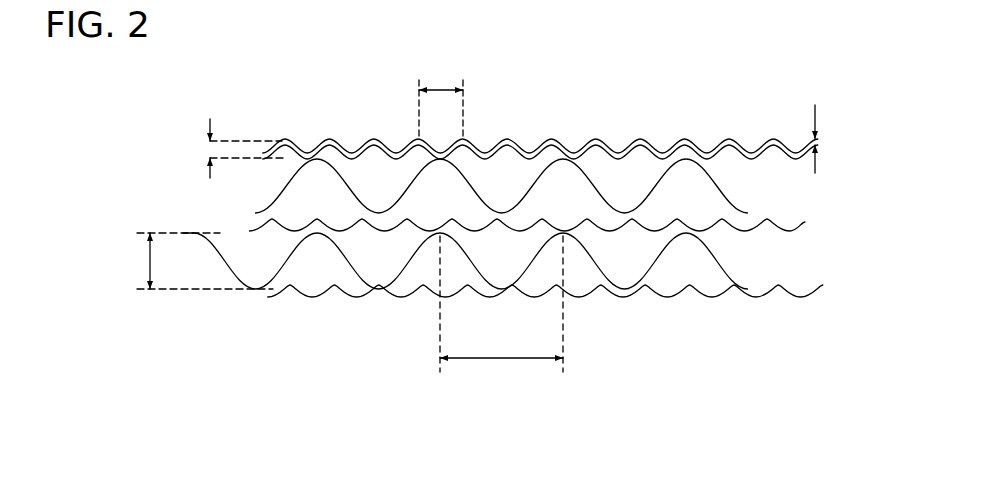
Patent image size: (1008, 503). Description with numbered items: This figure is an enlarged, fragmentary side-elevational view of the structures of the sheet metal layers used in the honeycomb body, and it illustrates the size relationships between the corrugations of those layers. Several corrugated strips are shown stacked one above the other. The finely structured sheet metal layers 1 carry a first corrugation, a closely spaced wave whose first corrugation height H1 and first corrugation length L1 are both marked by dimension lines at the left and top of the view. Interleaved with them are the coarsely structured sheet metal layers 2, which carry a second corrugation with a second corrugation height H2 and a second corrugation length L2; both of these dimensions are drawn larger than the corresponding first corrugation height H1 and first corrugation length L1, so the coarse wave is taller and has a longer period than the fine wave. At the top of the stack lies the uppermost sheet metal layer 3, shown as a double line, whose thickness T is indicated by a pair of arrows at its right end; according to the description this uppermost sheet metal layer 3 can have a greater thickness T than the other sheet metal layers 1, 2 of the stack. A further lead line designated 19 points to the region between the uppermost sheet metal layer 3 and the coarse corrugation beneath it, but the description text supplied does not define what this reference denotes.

The finely structured sheet metal layer 1 is at (789, 231).
The coarsely structured sheet metal layer 2 is at (712, 168).
The uppermost sheet metal layer 3 is at (730, 139).
The gap between plate and corrugated sheet 19 is at (565, 187).
The first corrugation height H1 is at (210, 119).
The second corrugation height H2 is at (150, 252).
The first corrugation length L1 is at (440, 90).
The second corrugation length L2 is at (527, 360).
The thickness T is at (818, 120).